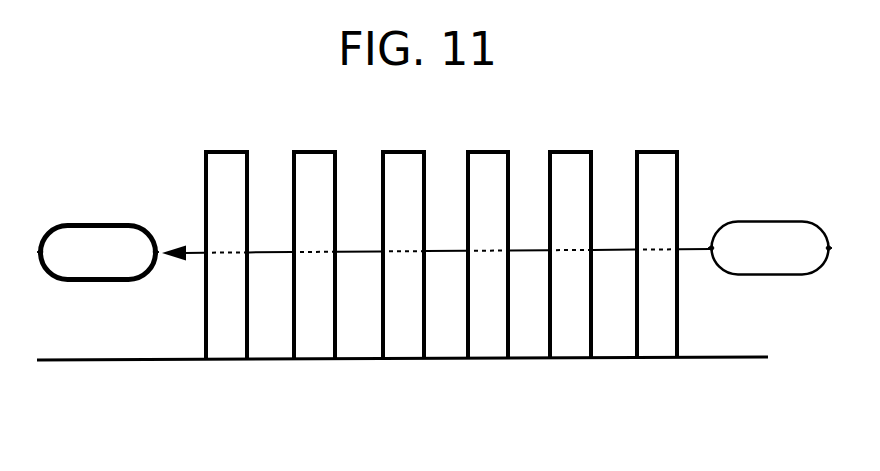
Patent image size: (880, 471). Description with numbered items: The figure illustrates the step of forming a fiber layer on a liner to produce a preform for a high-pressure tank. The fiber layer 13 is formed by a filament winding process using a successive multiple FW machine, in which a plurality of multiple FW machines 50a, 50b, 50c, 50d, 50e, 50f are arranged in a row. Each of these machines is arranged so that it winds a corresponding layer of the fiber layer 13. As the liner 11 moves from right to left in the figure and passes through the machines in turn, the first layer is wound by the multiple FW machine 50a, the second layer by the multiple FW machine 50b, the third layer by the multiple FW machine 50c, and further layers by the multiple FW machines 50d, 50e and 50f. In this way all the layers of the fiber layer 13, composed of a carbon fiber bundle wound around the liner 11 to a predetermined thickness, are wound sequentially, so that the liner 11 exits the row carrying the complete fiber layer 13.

The liner 11 is at (434, 216).
The fiber layer 13 is at (120, 222).
The multiple FW machine 50a is at (655, 345).
The multiple FW machine 50b is at (575, 345).
The multiple FW machine 50c is at (490, 345).
The multiple FW machine 50d is at (405, 345).
The multiple FW machine 50e is at (315, 345).
The multiple FW machine 50f is at (222, 350).